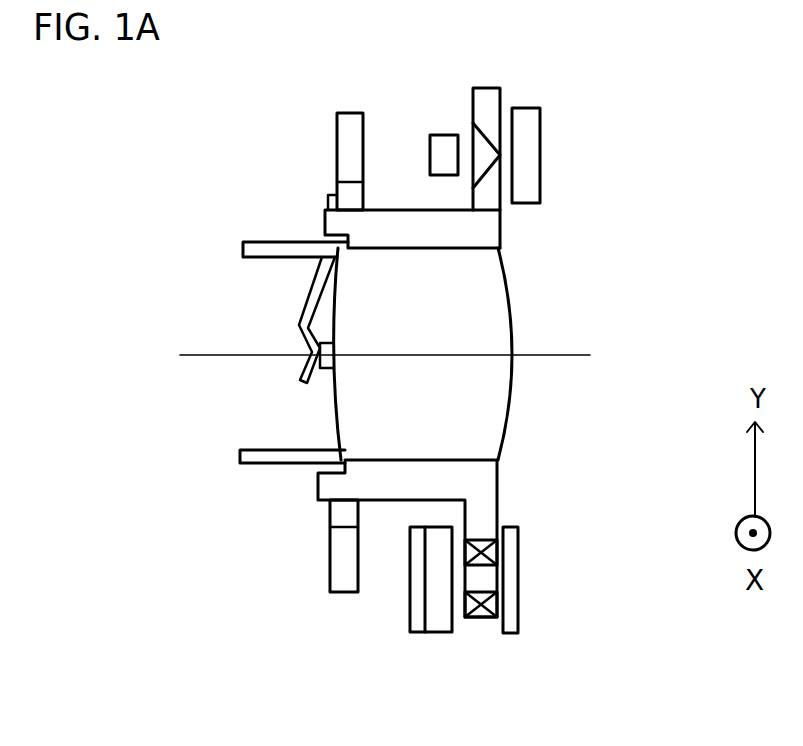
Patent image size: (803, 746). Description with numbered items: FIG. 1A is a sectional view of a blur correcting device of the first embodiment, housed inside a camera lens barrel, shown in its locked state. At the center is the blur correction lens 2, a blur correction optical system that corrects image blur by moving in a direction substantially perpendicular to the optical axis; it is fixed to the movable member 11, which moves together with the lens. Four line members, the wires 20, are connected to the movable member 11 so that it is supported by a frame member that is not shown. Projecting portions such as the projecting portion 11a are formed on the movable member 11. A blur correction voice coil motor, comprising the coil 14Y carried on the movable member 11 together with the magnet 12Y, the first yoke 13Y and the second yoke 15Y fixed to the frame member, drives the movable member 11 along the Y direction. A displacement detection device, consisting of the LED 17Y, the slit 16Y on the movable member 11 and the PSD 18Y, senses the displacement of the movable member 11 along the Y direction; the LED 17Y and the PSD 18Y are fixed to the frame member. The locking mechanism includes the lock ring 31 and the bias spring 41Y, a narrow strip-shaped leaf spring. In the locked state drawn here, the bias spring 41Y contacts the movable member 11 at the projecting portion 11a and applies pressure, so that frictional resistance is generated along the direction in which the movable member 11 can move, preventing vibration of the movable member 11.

The blur correction lens 2 is at (505, 302).
The movable member 11 is at (500, 225).
The projecting portion 11a is at (327, 370).
The magnet 12Y is at (435, 622).
The first yoke 13Y is at (415, 622).
The coil 14Y is at (479, 625).
The second yoke 15Y is at (508, 625).
The slit 16Y is at (487, 107).
The LED 17Y is at (442, 148).
The PSD 18Y is at (527, 125).
The wires 20 is at (243, 247).
The lock ring 31 is at (352, 128).
The bias spring 41Y is at (300, 322).